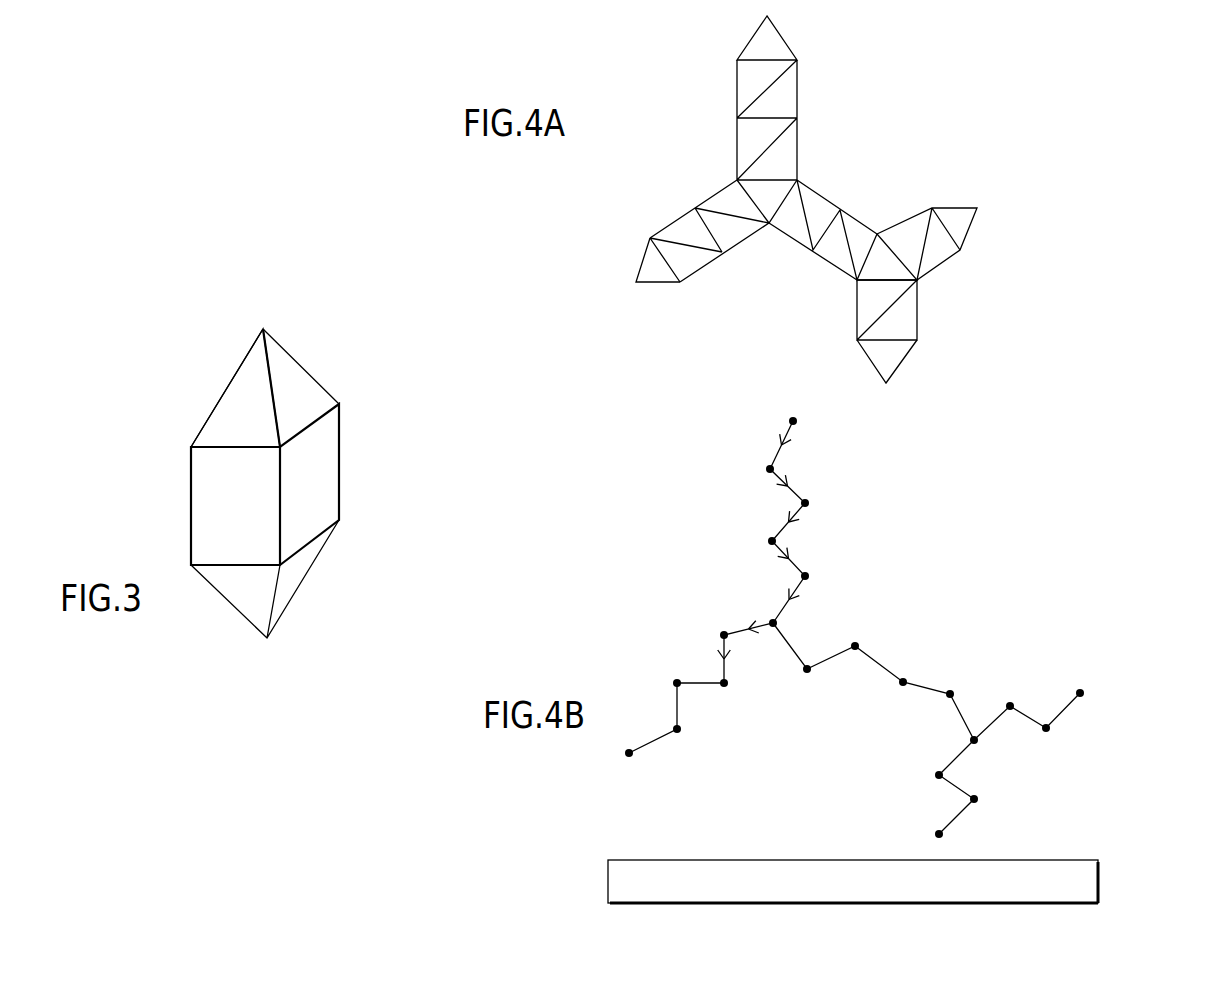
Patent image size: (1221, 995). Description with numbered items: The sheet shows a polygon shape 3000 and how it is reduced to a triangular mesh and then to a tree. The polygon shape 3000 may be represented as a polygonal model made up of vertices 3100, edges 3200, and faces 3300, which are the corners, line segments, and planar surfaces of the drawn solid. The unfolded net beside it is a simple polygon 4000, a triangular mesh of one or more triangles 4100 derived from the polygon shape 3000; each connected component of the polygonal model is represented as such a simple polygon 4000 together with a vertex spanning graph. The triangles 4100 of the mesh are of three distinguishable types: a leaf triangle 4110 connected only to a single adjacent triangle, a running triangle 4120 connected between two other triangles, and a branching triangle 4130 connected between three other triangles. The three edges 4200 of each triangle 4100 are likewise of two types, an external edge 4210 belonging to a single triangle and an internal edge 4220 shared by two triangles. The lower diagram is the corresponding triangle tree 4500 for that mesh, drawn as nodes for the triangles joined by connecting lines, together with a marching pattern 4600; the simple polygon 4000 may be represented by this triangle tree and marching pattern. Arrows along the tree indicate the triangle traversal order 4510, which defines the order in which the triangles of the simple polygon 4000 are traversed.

In FIG. 3, the polygon shape 3000 is at (308, 347).
In FIG. 3, the vertices 3100 is at (263, 327).
In FIG. 3, the edges 3200 is at (227, 382).
In FIG. 3, the faces 3300 is at (233, 498).
In FIG. 4A, the simple polygon 4000 is at (860, 123).
In FIG. 4A, the triangles 4100 is at (835, 253).
In FIG. 4A, the leaf triangle 4110 is at (893, 358).
In FIG. 4A, the running triangle 4120 is at (903, 323).
In FIG. 4A, the branching triangle 4130 is at (885, 265).
In FIG. 4A, the edges of triangle 4200 is at (737, 90).
In FIG. 4A, the external edge 4210 is at (657, 287).
In FIG. 4A, the internal edge 4220 is at (660, 261).
In FIG. 4B, the triangle tree 4500 is at (885, 595).
In FIG. 4B, the triangle traversal order 4510 is at (807, 529).
In FIG. 4B, the marching pattern 4600 is at (1062, 858).